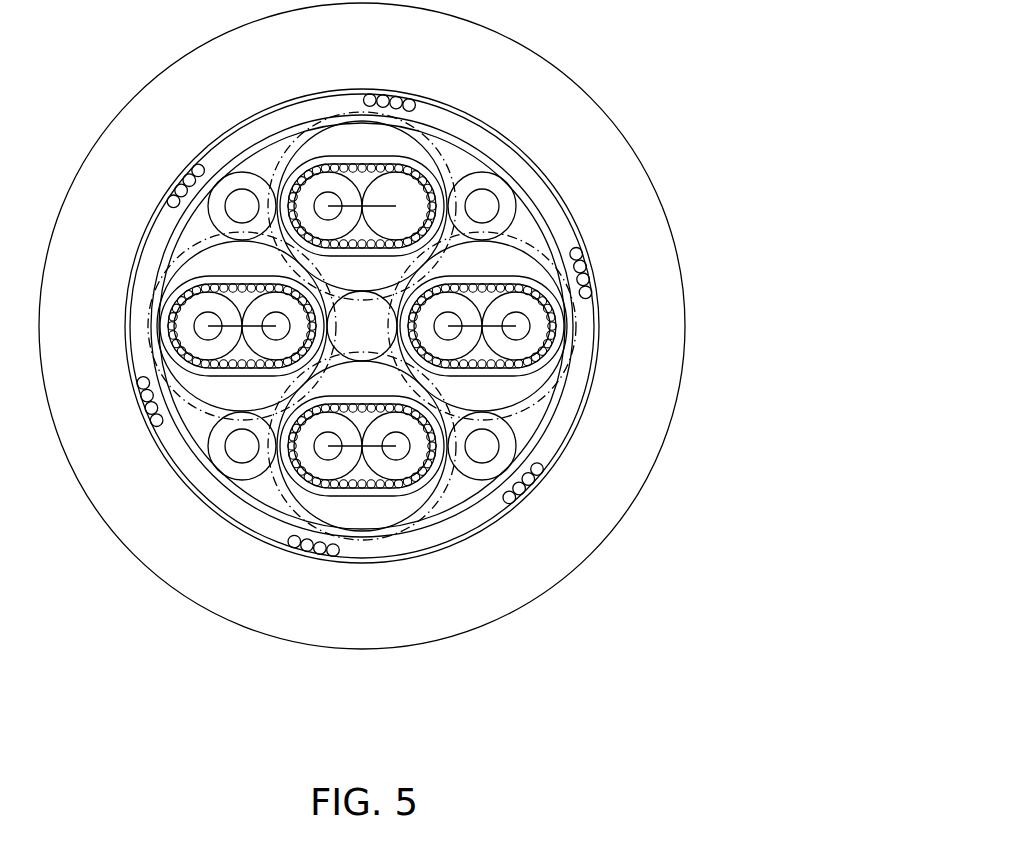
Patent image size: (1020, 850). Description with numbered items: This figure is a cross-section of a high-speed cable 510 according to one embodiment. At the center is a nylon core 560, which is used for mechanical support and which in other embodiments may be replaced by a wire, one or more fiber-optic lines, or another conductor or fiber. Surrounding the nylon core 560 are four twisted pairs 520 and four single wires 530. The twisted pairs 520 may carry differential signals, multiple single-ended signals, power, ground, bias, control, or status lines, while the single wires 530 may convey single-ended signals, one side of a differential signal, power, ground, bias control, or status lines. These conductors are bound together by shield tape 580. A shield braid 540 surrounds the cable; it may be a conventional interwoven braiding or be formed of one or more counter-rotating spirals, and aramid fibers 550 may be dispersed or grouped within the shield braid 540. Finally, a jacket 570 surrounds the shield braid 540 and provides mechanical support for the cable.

The cable 510 is at (562, 70).
The twisted pairs 520 is at (556, 291).
The single wires 530 is at (516, 215).
The shield braid 540 is at (592, 387).
The aramid fibers 550 is at (318, 558).
The nylon core 560 is at (422, 350).
The jacket 570 is at (642, 488).
The shield tape 580 is at (574, 345).